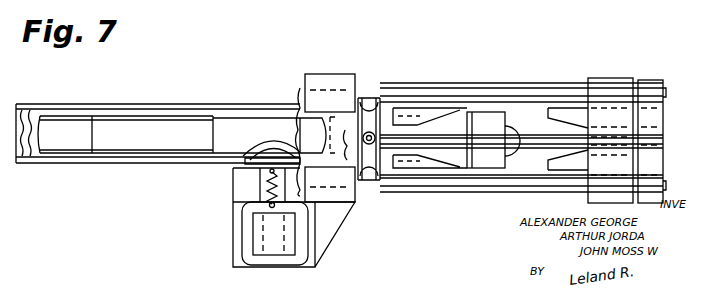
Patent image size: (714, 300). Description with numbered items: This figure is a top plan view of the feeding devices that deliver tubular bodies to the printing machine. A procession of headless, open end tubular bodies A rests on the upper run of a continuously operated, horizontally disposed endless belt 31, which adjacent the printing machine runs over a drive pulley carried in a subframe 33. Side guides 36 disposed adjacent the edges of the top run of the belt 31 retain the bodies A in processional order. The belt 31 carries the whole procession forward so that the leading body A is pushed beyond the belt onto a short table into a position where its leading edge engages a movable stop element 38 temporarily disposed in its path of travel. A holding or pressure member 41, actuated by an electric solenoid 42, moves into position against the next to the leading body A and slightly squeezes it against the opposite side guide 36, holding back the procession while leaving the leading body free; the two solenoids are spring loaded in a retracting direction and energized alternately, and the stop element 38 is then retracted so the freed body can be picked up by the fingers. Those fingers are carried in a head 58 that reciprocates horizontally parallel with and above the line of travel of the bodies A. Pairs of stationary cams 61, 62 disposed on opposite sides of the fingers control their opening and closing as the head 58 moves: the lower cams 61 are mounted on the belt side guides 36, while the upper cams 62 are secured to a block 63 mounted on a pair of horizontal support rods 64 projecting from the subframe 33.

The endless belt 31 is at (36, 115).
The side guides 36 is at (78, 108).
The tubular bodies A is at (240, 118).
The pressure member 41 is at (272, 148).
The subframe 33 is at (333, 74).
The horizontal support rods 64 is at (452, 90).
The stop element 38 is at (483, 120).
The lower cams 61 is at (406, 118).
The upper cams 62 is at (557, 110).
The head 58 is at (604, 92).
The block 63 is at (648, 92).
The electric solenoid 42 is at (247, 250).